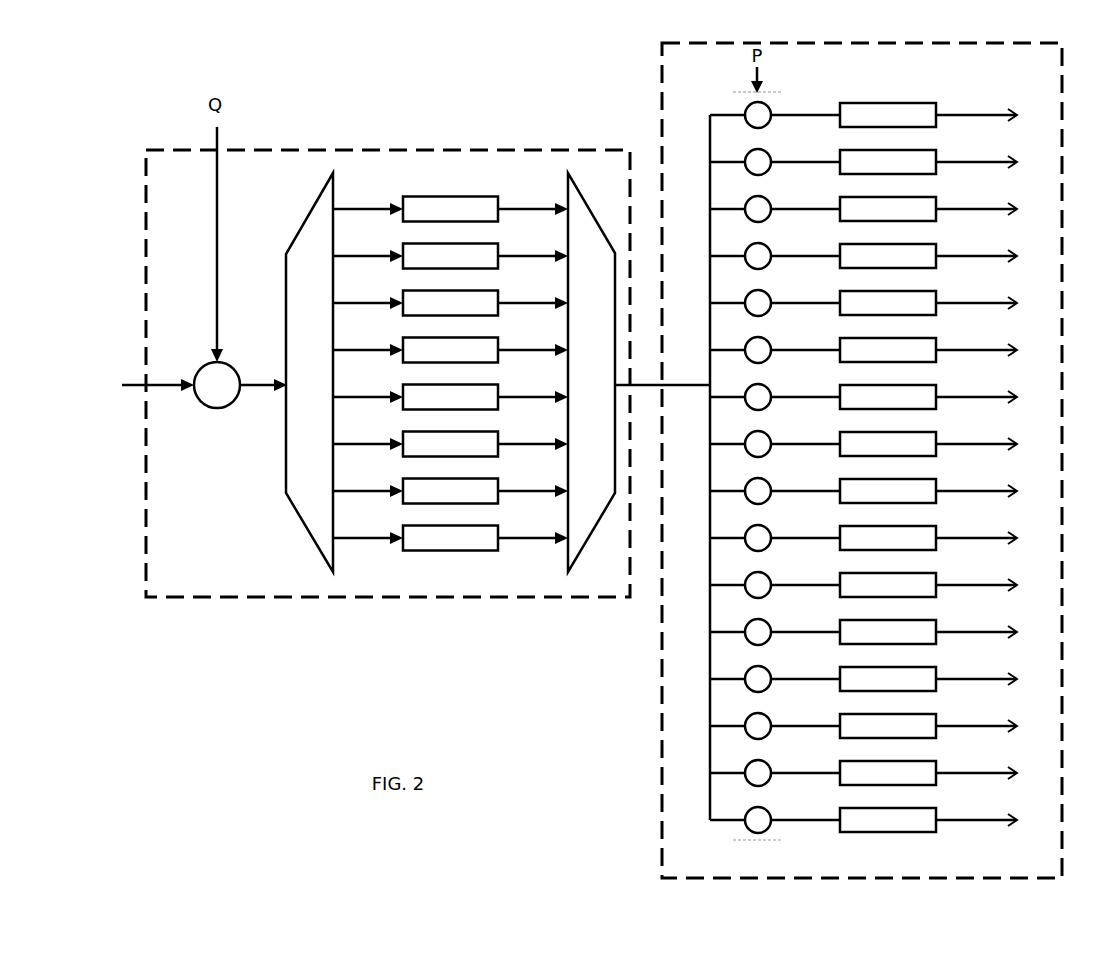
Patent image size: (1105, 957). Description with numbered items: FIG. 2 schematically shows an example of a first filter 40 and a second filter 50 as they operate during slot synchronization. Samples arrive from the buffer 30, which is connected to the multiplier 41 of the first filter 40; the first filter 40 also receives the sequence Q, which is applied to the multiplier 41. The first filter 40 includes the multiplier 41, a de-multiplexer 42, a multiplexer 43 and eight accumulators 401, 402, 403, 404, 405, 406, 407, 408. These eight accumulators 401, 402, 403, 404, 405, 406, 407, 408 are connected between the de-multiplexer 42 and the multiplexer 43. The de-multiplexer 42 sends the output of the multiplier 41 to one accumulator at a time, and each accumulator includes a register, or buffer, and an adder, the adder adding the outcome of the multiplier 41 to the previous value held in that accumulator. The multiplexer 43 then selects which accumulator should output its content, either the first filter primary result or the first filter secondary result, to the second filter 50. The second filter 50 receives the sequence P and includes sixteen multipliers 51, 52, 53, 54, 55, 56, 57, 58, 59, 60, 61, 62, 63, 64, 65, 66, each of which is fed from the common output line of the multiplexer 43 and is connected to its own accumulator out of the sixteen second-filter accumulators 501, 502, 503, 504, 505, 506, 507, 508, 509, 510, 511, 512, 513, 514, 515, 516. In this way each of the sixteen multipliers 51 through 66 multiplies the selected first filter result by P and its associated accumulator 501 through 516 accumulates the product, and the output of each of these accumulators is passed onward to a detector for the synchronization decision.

The buffer 30 is at (128, 383).
The first filter 40 is at (196, 586).
The multiplier 41 is at (218, 411).
The de-multiplexer 42 is at (306, 530).
The multiplexer 43 is at (567, 192).
The accumulator A1 401 is at (464, 186).
The accumulator A2 402 is at (450, 256).
The accumulator A3 403 is at (450, 303).
The accumulator A4 404 is at (450, 350).
The accumulator A5 405 is at (450, 397).
The accumulator A6 406 is at (450, 444).
The accumulator A7 407 is at (450, 491).
The accumulator A8 408 is at (450, 538).
The second filter 50 is at (986, 867).
The multiplier 51 is at (757, 842).
The multiplier 52 is at (740, 162).
The multiplier 53 is at (740, 209).
The multiplier 54 is at (740, 256).
The multiplier 55 is at (740, 303).
The multiplier 56 is at (740, 350).
The multiplier 57 is at (740, 397).
The multiplier 58 is at (740, 444).
The multiplier 59 is at (740, 491).
The multiplier 60 is at (740, 538).
The multiplier 61 is at (740, 585).
The multiplier 62 is at (740, 632).
The multiplier 63 is at (740, 679).
The multiplier 64 is at (740, 726).
The multiplier 65 is at (740, 773).
The multiplier 66 is at (740, 820).
The accumulator A'1 501 is at (889, 97).
The accumulator A'2 502 is at (894, 162).
The accumulator A'3 503 is at (894, 209).
The accumulator A'4 504 is at (894, 256).
The accumulator A'5 505 is at (894, 303).
The accumulator A'6 506 is at (894, 350).
The accumulator A'7 507 is at (894, 397).
The accumulator A'8 508 is at (894, 444).
The accumulator A'9 509 is at (894, 491).
The accumulator A'10 510 is at (894, 538).
The accumulator A'11 511 is at (894, 585).
The accumulator A'12 512 is at (894, 632).
The accumulator A'13 513 is at (894, 679).
The accumulator A'14 514 is at (894, 726).
The accumulator A'15 515 is at (894, 773).
The accumulator A'16 516 is at (894, 820).